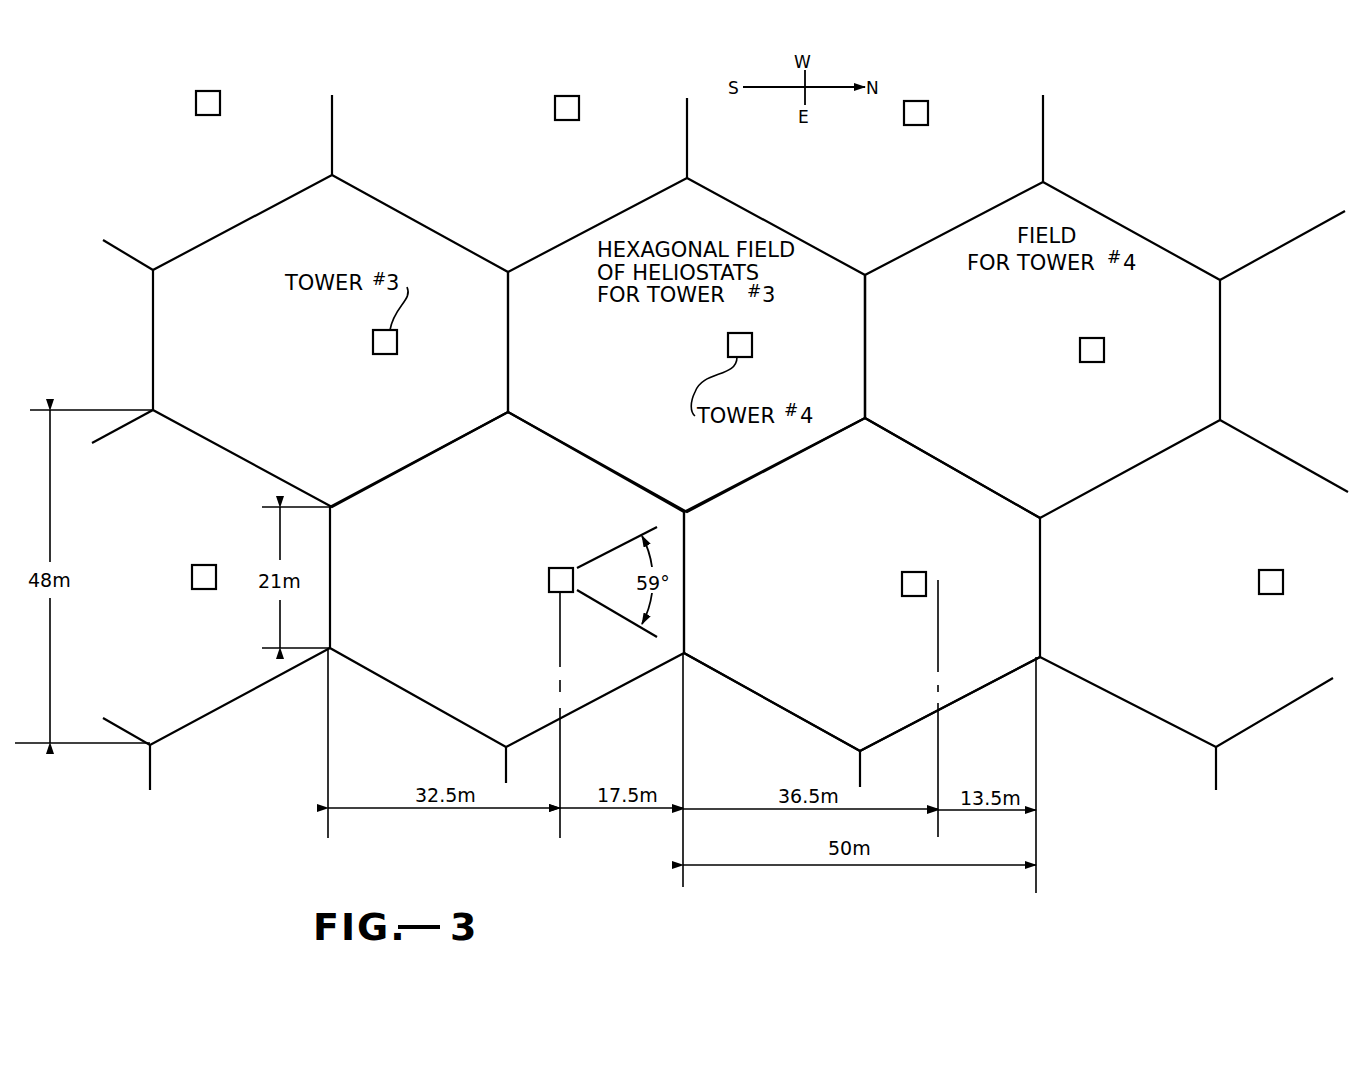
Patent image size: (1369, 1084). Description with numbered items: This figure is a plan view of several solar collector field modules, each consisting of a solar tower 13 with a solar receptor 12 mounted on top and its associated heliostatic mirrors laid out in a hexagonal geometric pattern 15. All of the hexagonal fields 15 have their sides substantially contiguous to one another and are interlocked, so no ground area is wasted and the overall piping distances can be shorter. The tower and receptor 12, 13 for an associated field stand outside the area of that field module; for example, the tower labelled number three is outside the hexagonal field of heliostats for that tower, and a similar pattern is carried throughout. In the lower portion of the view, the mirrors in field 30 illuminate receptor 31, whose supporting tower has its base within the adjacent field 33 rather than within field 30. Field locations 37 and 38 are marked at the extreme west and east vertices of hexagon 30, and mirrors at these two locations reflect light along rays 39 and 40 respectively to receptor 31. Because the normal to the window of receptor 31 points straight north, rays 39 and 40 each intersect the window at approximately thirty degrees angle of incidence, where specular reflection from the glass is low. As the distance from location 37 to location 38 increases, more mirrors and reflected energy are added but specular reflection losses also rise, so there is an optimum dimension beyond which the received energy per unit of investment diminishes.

The hexagonal geometric pattern 15 is at (264, 211).
The receptor 12 is at (505, 346).
The tower 13 is at (373, 338).
The receptor 31 is at (550, 573).
The field 33 is at (443, 578).
The field 30 is at (812, 594).
The field location 37 is at (864, 418).
The field location 38 is at (860, 751).
The ray 39 is at (630, 540).
The ray 40 is at (617, 615).